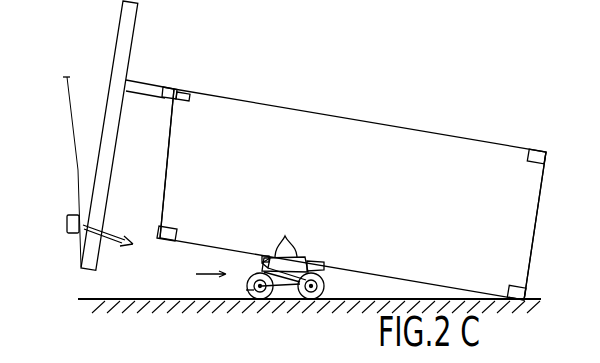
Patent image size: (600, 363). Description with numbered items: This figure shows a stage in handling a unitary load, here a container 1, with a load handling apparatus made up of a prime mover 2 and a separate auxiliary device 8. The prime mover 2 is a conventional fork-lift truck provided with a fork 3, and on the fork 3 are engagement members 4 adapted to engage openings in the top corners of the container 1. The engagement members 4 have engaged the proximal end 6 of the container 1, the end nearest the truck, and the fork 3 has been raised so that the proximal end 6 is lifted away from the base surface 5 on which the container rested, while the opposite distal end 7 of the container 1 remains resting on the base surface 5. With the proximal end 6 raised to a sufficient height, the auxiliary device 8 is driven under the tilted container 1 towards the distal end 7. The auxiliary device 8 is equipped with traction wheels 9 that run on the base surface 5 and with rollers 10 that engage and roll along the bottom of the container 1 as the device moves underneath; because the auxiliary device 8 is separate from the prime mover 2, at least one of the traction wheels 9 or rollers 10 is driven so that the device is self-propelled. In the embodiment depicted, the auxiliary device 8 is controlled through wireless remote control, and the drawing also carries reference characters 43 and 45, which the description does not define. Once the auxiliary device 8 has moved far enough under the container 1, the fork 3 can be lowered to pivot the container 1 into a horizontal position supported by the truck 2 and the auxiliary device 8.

The container 1 is at (455, 141).
The prime mover 2 is at (66, 77).
The fork 3 is at (156, 87).
The engagement members 4 is at (172, 88).
The base surface 5 is at (127, 298).
The proximal end 6 is at (164, 178).
The distal end 7 is at (528, 275).
The auxiliary device 8 is at (237, 288).
The traction wheels 9 is at (298, 299).
The rollers 10 is at (285, 241).
The hook 43 is at (257, 258).
The latch 45 is at (68, 222).